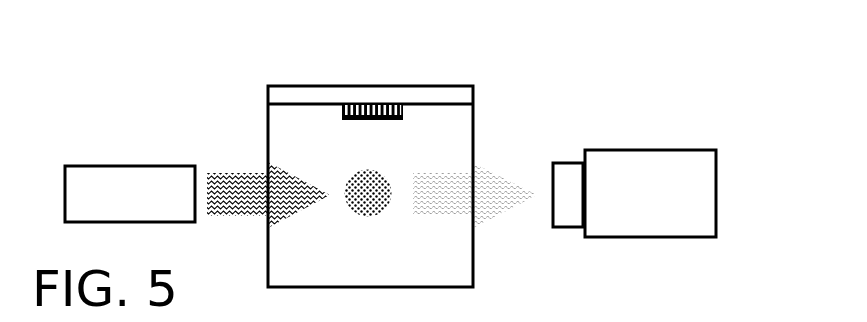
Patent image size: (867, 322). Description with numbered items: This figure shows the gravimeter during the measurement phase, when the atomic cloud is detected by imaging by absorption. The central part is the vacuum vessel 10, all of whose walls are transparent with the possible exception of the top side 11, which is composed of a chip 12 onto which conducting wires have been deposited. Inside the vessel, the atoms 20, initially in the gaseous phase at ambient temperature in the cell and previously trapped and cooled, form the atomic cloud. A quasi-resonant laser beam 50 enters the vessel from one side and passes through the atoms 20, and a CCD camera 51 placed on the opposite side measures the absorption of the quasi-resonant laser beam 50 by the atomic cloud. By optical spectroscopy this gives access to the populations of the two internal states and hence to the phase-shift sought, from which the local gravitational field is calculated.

The vacuum vessel 10 is at (473, 134).
The top side 11 is at (381, 97).
The chip 12 is at (353, 121).
The atoms 20 is at (372, 217).
The quasi-resonant laser beam 50 is at (241, 182).
The CCD camera 51 is at (633, 163).